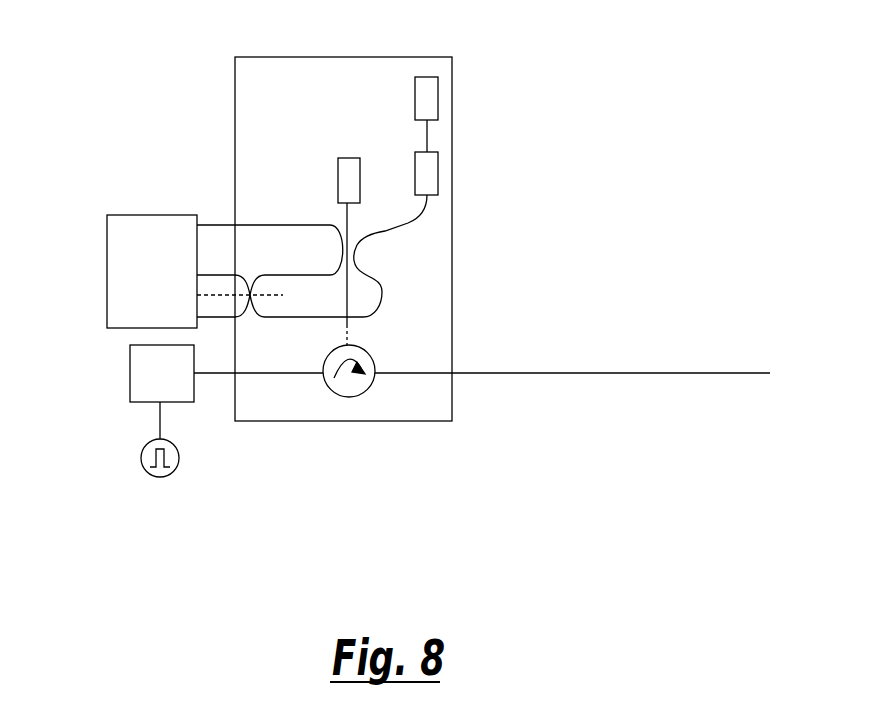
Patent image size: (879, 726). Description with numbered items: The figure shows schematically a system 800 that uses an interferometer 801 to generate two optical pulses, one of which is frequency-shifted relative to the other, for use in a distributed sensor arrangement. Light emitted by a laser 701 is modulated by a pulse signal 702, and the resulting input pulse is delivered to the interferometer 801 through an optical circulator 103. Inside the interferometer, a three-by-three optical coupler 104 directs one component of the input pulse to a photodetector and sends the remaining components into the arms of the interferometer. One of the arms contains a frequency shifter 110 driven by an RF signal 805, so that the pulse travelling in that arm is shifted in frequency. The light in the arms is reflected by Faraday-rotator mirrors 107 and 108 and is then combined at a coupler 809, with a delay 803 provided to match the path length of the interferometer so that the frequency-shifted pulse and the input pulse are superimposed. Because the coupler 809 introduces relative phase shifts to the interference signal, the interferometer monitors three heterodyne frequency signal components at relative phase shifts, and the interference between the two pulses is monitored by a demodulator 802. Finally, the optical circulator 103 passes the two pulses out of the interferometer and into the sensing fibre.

The system 800 is at (514, 290).
The interferometer 801 is at (358, 56).
The demodulator 802 is at (142, 215).
The 3×3 optical coupler 104 is at (340, 232).
The Faraday-rotator mirror 107 is at (338, 173).
The Faraday-rotator mirror 108 is at (438, 95).
The frequency shifter 110 is at (438, 170).
The RF signal 805 is at (425, 213).
The delay 803 is at (383, 292).
The coupler 809 is at (250, 308).
The optical circulator 103 is at (349, 397).
The laser 701 is at (133, 403).
The pulse signal 702 is at (160, 477).